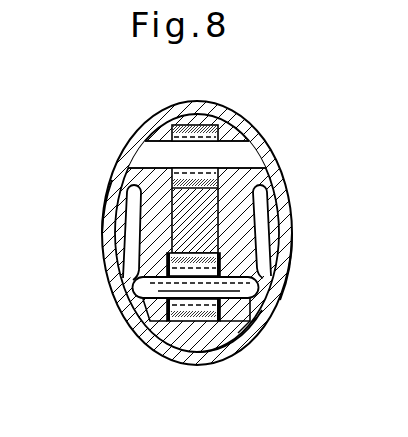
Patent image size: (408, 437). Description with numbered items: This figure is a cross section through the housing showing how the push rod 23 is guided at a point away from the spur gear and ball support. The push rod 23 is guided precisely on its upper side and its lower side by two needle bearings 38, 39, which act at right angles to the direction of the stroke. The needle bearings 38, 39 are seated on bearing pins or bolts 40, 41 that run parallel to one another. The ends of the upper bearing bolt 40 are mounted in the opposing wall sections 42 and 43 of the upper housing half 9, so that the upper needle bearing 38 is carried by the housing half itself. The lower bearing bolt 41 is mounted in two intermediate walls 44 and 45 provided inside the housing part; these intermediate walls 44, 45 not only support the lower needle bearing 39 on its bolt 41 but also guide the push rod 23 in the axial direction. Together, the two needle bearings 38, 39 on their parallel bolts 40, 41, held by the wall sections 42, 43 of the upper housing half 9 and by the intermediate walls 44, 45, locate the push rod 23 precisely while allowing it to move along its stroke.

The upper housing half 9 is at (163, 116).
The push rod 23 is at (207, 221).
The needle bearing 38 is at (216, 124).
The needle bearing 39 is at (167, 322).
The upper bearing bolt 40 is at (148, 147).
The lower bearing bolt 41 is at (251, 330).
The wall section 42 is at (279, 238).
The wall section 43 is at (116, 210).
The intermediate wall 44 is at (233, 250).
The intermediate wall 45 is at (150, 234).